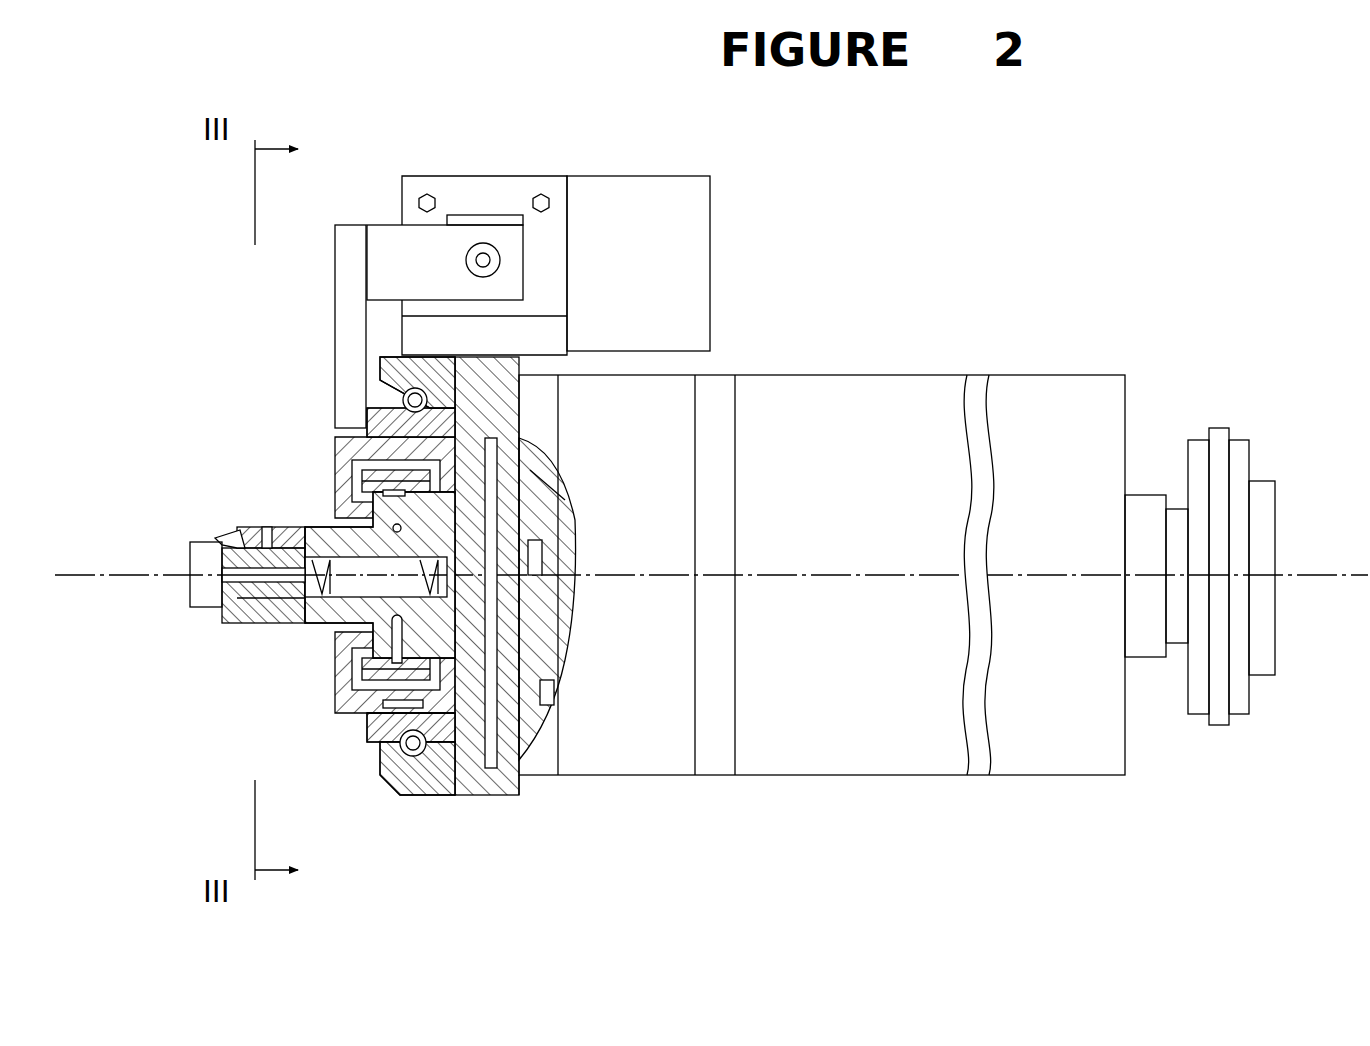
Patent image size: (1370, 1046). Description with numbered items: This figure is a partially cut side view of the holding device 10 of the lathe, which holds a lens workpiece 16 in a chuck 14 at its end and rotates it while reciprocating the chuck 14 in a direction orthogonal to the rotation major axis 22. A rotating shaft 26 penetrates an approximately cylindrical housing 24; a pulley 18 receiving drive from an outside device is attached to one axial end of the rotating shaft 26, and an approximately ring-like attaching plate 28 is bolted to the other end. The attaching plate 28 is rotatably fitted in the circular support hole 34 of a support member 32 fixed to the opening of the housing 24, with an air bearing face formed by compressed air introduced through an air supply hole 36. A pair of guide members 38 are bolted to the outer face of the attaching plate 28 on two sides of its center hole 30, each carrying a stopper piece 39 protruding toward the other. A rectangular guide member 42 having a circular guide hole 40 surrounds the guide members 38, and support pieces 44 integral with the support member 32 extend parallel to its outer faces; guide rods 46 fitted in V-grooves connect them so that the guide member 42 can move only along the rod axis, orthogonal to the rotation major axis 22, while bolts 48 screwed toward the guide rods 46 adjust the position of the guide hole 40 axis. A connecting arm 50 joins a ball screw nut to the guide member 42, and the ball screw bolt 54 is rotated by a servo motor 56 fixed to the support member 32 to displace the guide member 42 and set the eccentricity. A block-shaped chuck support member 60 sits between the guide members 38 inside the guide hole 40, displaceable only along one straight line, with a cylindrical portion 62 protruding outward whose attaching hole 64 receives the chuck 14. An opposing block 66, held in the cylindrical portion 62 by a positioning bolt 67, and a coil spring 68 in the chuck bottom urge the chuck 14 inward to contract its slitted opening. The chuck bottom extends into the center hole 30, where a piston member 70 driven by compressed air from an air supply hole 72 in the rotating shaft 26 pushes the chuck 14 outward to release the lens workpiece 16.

The holding device 10 is at (880, 252).
The chuck 14 is at (240, 615).
The lens workpiece 16 is at (205, 567).
The pulley 18 is at (1238, 447).
The rotation major axis 22 is at (1312, 573).
The housing 24 is at (880, 426).
The rotating shaft 26 is at (560, 520).
The attaching plate 28 is at (422, 576).
The center hole 30 is at (471, 575).
The support member 32 is at (527, 800).
The support hole 34 is at (554, 720).
The air supply hole 36 is at (488, 780).
The guide members 38 is at (333, 445).
The stopper pieces 39 is at (345, 512).
The guide hole 40 is at (352, 738).
The guide member 42 is at (385, 770).
The support pieces 44 is at (380, 395).
The guide rods 46 is at (420, 390).
The bolts 48 is at (400, 380).
The connecting arm 50 is at (345, 357).
The bolt 54 is at (483, 243).
The servo motor 56 is at (627, 210).
The chuck support member 60 is at (455, 645).
The cylindrical portion 62 is at (262, 625).
The attaching hole 64 is at (268, 527).
The opposing block 66 is at (225, 590).
The positioning bolt 67 is at (238, 530).
The coil spring 68 is at (372, 718).
The piston member 70 is at (565, 495).
The air supply hole 72 is at (560, 552).